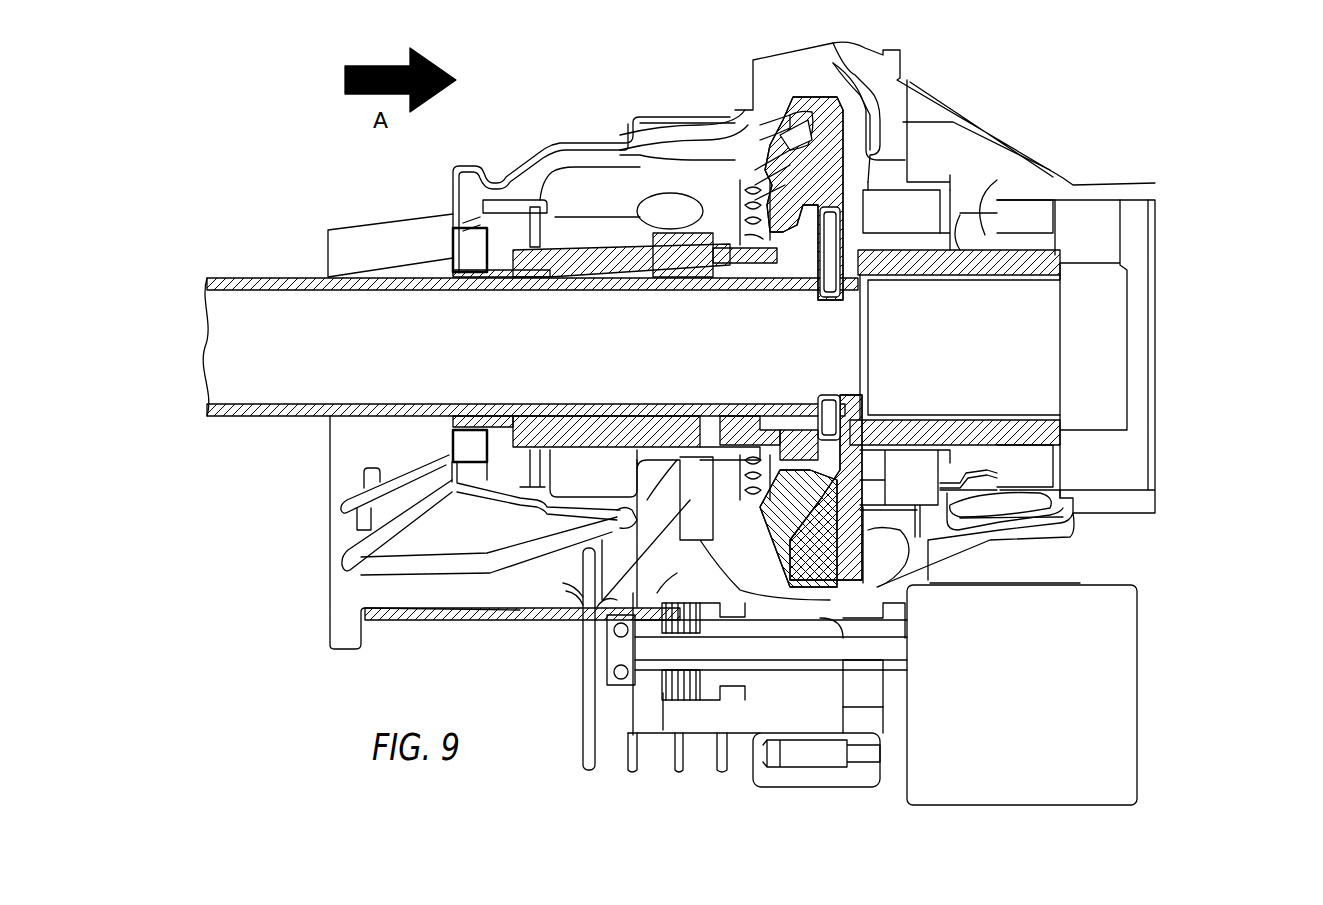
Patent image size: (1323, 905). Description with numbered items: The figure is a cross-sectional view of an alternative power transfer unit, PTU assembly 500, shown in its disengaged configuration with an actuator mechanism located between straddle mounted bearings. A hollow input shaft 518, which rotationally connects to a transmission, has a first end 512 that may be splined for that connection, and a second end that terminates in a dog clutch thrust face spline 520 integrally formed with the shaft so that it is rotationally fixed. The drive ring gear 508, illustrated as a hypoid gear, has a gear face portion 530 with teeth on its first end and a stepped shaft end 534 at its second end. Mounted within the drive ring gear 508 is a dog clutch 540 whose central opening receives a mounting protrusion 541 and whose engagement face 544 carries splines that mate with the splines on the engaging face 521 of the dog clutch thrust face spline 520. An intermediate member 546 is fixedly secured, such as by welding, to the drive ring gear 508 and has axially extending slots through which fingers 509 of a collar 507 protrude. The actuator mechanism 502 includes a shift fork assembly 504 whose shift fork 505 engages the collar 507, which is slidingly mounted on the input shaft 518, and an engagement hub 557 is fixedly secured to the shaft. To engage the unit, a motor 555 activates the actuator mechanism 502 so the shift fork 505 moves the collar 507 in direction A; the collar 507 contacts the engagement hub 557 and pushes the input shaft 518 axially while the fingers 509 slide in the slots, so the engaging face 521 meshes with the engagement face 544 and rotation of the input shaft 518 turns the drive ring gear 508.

The PTU assembly 500 is at (1232, 170).
The actuator mechanism 502 is at (560, 632).
The shift fork assembly 504 is at (722, 680).
The shift fork 505 is at (580, 603).
The collar 507 is at (618, 231).
The drive ring gear 508 is at (835, 130).
The fingers 509 is at (617, 516).
The first end 512 is at (197, 350).
The input shaft 518 is at (242, 418).
The dog clutch thrust face spline 520 is at (755, 195).
The engaging face 521 is at (857, 460).
The gear face portion 530 is at (730, 241).
The shaft end 534 is at (955, 245).
The dog clutch 540 is at (805, 200).
The mounting protrusion 541 is at (830, 397).
The engagement face 544 is at (795, 280).
The intermediate member 546 is at (527, 260).
The motor 555 is at (1051, 703).
The engagement hub 557 is at (693, 227).